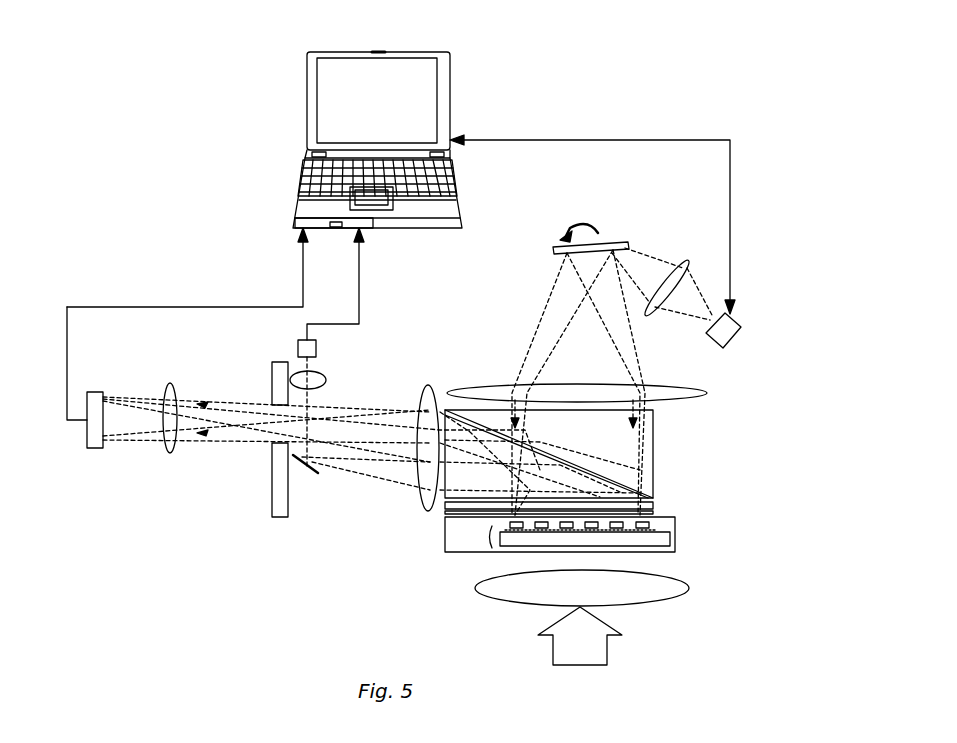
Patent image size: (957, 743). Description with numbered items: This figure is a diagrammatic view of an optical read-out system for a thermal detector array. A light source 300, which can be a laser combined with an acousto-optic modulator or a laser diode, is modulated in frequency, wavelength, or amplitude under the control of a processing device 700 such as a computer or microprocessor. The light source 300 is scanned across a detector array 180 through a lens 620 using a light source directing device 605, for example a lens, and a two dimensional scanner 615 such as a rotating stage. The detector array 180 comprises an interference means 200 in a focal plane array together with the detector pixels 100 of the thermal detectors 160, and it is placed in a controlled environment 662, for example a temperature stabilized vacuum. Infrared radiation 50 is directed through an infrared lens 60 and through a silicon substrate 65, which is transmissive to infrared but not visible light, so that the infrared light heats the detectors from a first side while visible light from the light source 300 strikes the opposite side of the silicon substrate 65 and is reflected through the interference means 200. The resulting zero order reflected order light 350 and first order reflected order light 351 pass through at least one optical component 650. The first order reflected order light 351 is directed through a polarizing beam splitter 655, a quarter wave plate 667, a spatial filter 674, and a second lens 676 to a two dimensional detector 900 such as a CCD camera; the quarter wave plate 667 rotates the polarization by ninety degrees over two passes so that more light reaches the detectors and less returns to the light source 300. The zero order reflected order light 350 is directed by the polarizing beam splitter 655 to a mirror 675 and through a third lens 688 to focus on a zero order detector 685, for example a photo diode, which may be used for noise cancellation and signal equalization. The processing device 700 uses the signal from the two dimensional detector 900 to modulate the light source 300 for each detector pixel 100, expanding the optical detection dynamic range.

The processing device 700 is at (308, 103).
The two dimensional detector 900 is at (93, 448).
The second lens 676 is at (170, 453).
The first order reflected order light 351 is at (194, 412).
The spatial filter 674 is at (276, 517).
The zero order detector 685 is at (298, 347).
The third lens 688 is at (326, 378).
The mirror 675 is at (305, 476).
The zero order reflected order light 350 is at (350, 458).
The optical component 650 is at (428, 385).
The lens 620 is at (706, 393).
The polarizing beam splitter 655 is at (653, 432).
The two dimensional scanner 615 is at (593, 240).
The light source directing device 605 is at (683, 262).
The light source 300 is at (741, 327).
The quarter wave plate 667 is at (653, 505).
The interference means 200 is at (656, 512).
The detector array 180 is at (745, 496).
The detector pixels 100 is at (660, 525).
The controlled environment 662 is at (676, 540).
The silicon substrate 65 is at (500, 547).
The thermal detectors 160 is at (490, 537).
The infrared lens 60 is at (476, 589).
The infrared radiation 50 is at (553, 656).